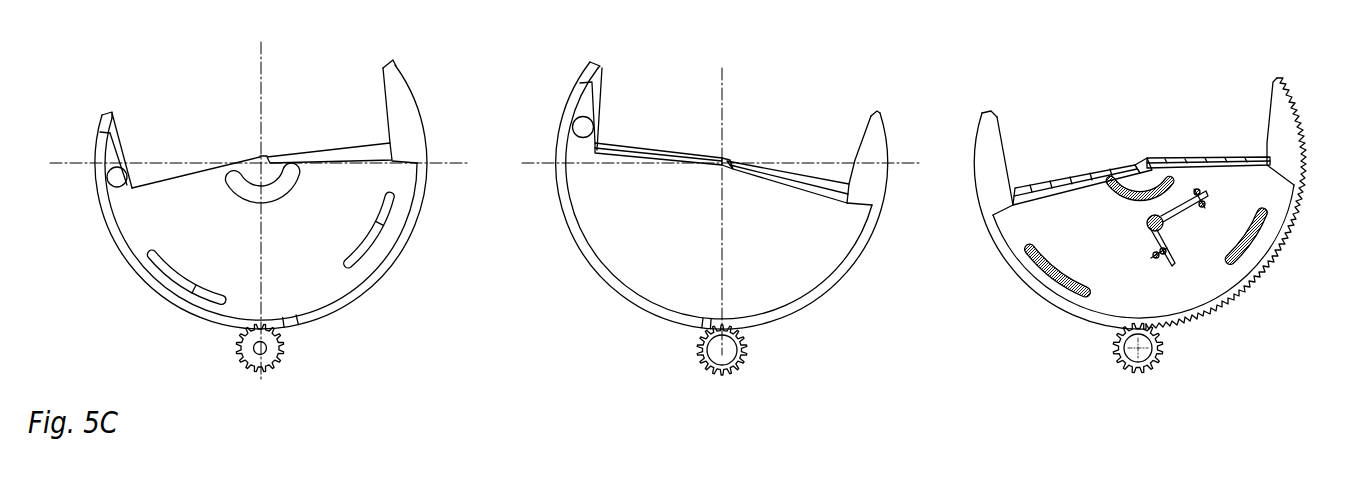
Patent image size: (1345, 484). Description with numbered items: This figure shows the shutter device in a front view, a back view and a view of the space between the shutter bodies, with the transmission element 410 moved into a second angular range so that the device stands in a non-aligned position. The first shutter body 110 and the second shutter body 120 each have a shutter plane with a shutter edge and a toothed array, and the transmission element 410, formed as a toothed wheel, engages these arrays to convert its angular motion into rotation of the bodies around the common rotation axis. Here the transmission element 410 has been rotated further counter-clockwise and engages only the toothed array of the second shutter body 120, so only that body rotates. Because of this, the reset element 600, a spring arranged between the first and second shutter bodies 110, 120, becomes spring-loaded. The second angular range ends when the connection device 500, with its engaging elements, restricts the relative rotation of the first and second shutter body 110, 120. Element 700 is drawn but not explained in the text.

The first shutter body 110 is at (630, 244).
The second shutter body 120 is at (343, 235).
The transmission element 410 is at (277, 361).
The connection device 500 is at (158, 287).
The reset element 600 is at (1181, 229).
The pivot latch 700 is at (114, 176).